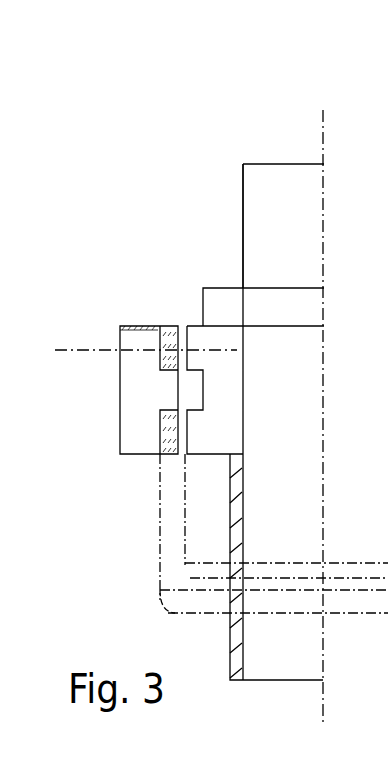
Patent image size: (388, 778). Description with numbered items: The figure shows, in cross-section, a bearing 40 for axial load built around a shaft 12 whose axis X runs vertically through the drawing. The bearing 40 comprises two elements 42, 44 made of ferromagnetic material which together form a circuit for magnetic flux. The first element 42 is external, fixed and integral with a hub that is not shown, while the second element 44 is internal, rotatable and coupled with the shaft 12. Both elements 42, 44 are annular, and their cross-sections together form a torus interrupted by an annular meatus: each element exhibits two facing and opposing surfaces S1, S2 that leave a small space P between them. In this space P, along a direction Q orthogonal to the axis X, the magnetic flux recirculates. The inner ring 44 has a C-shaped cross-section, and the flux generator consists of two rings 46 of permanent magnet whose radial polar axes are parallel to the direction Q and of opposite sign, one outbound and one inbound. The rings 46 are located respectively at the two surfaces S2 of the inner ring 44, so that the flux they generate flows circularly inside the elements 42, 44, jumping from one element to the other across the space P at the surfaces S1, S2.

The bearing 40 is at (212, 140).
The shaft 12 is at (242, 212).
The first element 42 is at (143, 455).
The second element 44 is at (213, 455).
The rings of permanent magnet 46 is at (170, 326).
The axis X is at (325, 118).
The direction Q is at (65, 348).
The space P is at (180, 322).
The surfaces S1 is at (156, 362).
The surfaces S2 is at (190, 355).